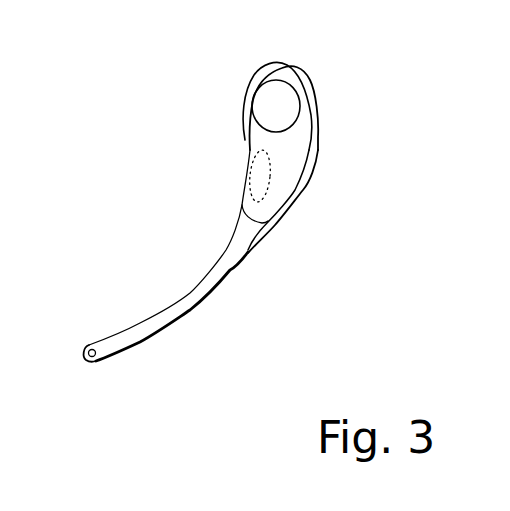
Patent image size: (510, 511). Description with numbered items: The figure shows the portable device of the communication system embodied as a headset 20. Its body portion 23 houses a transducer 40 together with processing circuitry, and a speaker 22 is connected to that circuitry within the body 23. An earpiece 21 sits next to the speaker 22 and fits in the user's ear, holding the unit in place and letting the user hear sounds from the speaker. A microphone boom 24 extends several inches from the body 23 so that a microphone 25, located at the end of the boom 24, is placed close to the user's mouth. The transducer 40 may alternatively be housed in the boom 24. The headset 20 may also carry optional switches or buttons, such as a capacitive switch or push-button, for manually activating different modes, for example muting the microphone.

The headset 20 is at (328, 78).
The earpiece 21 is at (272, 67).
The speaker 22 is at (267, 100).
The body portion 23 is at (295, 160).
The microphone boom 24 is at (183, 312).
The microphone 25 is at (88, 357).
The transducer 40 is at (250, 180).